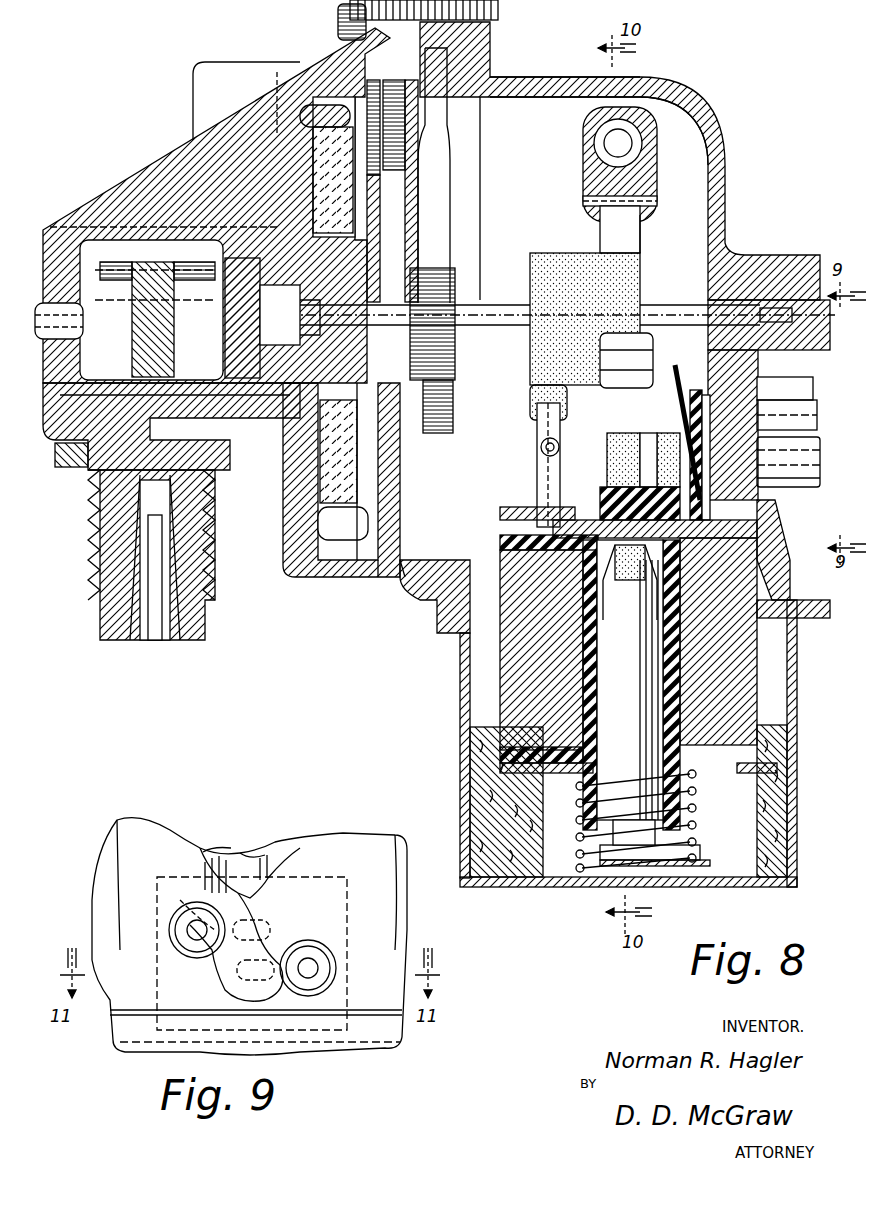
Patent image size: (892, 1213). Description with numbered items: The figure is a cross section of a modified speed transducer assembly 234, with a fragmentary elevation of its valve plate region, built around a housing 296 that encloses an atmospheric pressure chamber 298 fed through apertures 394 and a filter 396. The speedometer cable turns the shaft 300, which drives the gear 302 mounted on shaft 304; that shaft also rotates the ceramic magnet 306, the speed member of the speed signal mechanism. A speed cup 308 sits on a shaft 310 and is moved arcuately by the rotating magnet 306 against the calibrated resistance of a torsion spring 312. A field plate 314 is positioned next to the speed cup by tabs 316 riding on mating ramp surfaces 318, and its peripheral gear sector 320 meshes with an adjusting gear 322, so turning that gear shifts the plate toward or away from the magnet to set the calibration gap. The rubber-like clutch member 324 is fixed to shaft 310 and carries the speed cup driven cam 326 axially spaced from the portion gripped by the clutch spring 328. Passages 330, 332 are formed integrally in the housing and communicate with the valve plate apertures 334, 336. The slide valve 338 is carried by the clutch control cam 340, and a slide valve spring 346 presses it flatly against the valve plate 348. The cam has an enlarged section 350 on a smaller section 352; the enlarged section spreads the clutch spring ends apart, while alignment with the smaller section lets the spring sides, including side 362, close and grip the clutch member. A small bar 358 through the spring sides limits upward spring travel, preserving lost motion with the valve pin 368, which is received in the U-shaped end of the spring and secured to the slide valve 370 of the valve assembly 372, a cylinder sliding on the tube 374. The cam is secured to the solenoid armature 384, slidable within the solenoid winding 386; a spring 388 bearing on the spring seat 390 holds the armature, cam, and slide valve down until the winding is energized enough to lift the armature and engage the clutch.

In FIG. 8, the speed transducer assembly 234 is at (537, 78).
In FIG. 8, the housing 296 is at (683, 92).
In FIG. 8, the atmospheric pressure chamber 298 is at (690, 135).
In FIG. 8, the shaft 300 is at (130, 618).
In FIG. 8, the gear 302 is at (148, 262).
In FIG. 8, the shaft 304 is at (50, 340).
In FIG. 8, the ceramic magnet 306 is at (313, 160).
In FIG. 8, the speed cup 308 is at (372, 80).
In FIG. 8, the shaft 310 is at (492, 305).
In FIG. 8, the torsion spring 312 is at (450, 203).
In FIG. 8, the field plate 314 is at (400, 515).
In FIG. 8, the tabs 316 is at (400, 565).
In FIG. 8, the ramp surfaces 318 is at (400, 590).
In FIG. 8, the peripheral gear sector 320 is at (393, 113).
In FIG. 8, the adjusting gear 322 is at (293, 77).
In FIG. 8, the clutch member 324 is at (540, 253).
In FIG. 8, the speed cup driven cam 326 is at (535, 385).
In FIG. 8, the clutch spring 328 is at (648, 240).
In FIG. 8, the passage 330 is at (805, 415).
In FIG. 9, the passage 330 is at (190, 935).
In FIG. 8, the passage 332 is at (820, 450).
In FIG. 9, the passage 332 is at (312, 968).
In FIG. 8, the valve plate aperture 334 is at (680, 428).
In FIG. 9, the valve plate aperture 334 is at (270, 925).
In FIG. 8, the valve plate aperture 336 is at (762, 470).
In FIG. 9, the valve plate aperture 336 is at (237, 975).
In FIG. 8, the slide valve 338 is at (690, 425).
In FIG. 8, the clutch control cam 340 is at (575, 507).
In FIG. 8, the slide valve spring 346 is at (695, 460).
In FIG. 8, the valve plate 348 is at (718, 400).
In FIG. 9, the valve plate 348 is at (180, 878).
In FIG. 8, the enlarged section 350 is at (612, 433).
In FIG. 8, the smaller section 352 is at (541, 449).
In FIG. 8, the small bar 358 is at (560, 412).
In FIG. 8, the spring side 362 is at (645, 360).
In FIG. 8, the valve pin 368 is at (655, 200).
In FIG. 8, the slide valve 370 is at (608, 152).
In FIG. 8, the valve assembly 372 is at (578, 112).
In FIG. 8, the tube 374 is at (597, 143).
In FIG. 8, the solenoid armature 384 is at (600, 710).
In FIG. 8, the solenoid winding 386 is at (755, 670).
In FIG. 8, the spring 388 is at (710, 880).
In FIG. 8, the spring seat 390 is at (580, 887).
In FIG. 8, the apertures 394 is at (490, 887).
In FIG. 8, the filter 396 is at (770, 790).